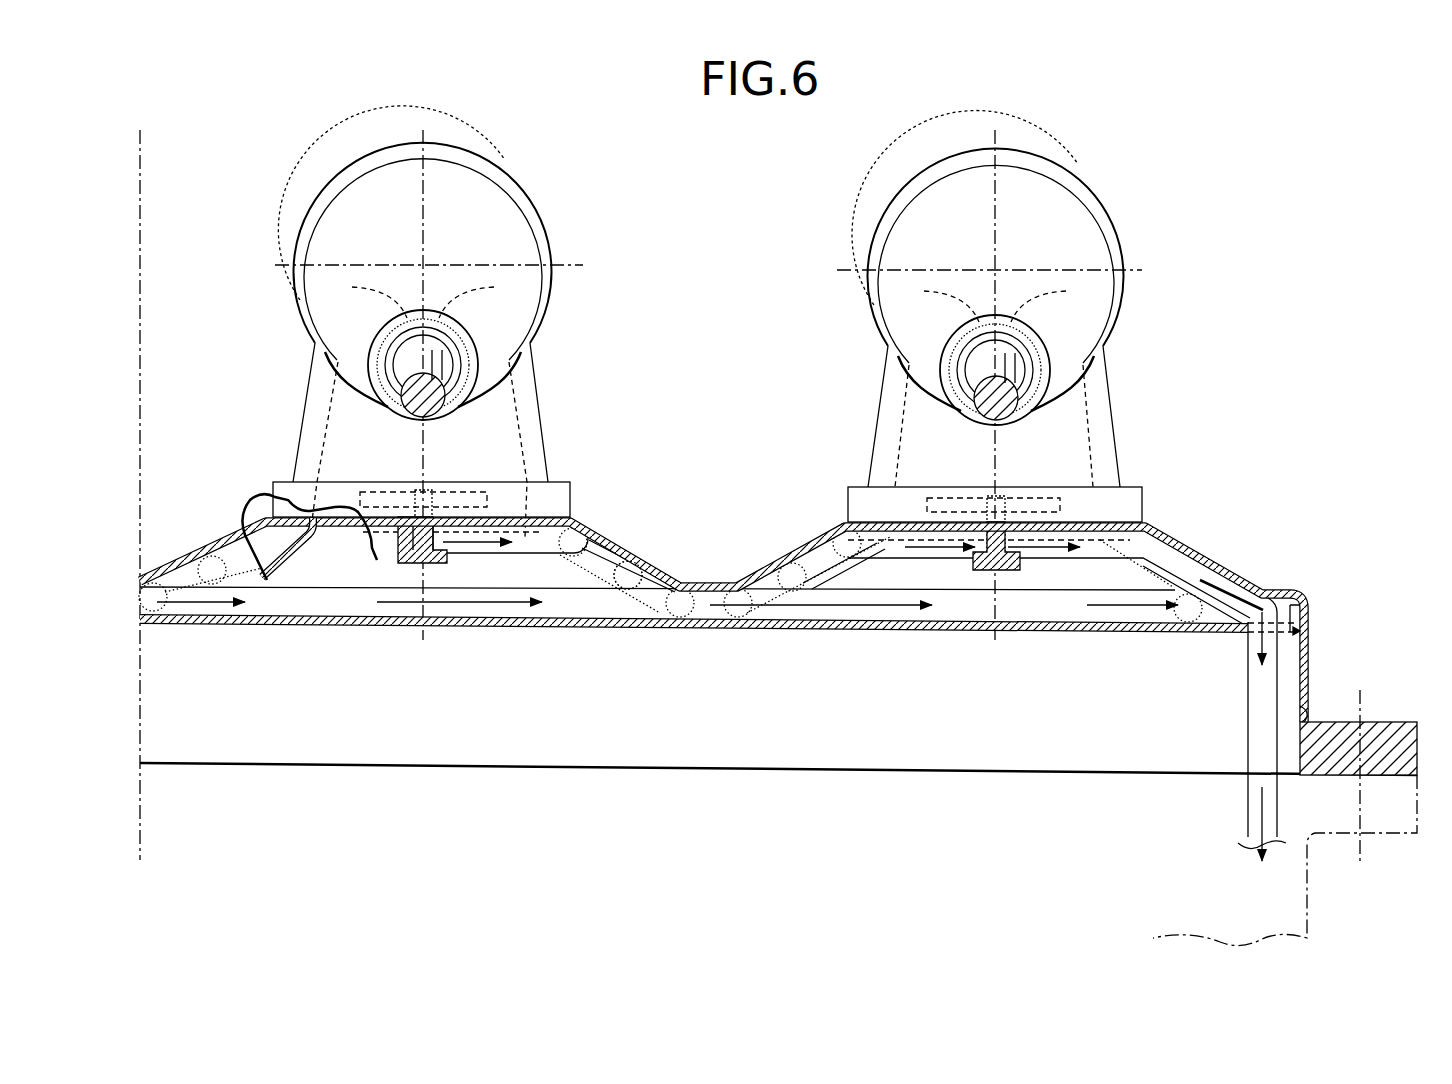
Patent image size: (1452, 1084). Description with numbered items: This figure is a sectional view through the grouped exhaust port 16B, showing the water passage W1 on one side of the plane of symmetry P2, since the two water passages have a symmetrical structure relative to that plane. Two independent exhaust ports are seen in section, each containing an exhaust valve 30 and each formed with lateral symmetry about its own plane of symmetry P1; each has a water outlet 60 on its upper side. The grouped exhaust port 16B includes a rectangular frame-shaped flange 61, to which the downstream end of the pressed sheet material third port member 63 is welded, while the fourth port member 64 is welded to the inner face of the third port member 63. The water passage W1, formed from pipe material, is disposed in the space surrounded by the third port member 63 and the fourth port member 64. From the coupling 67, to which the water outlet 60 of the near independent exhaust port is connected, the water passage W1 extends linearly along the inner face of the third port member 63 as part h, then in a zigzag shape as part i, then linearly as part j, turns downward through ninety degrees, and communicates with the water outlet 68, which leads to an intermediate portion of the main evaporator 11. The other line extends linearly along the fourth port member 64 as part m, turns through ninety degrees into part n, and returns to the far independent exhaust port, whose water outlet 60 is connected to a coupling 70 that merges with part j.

The plane of symmetry P2 is at (142, 187).
The plane of symmetry P1 is at (423, 242).
The exhaust valve 30 is at (492, 208).
The water outlet 60 is at (378, 484).
The coupling 70 is at (980, 562).
The part h is at (480, 527).
The part j is at (1080, 530).
The third port member 63 is at (783, 553).
The coupling 67 is at (397, 563).
The part i is at (648, 575).
The part m is at (570, 608).
The water passage W1 is at (867, 575).
The fourth port member 64 is at (957, 630).
The part n is at (1213, 632).
The grouped exhaust port 16B is at (1250, 553).
The water outlet 68 is at (1248, 815).
The flange 61 is at (1397, 722).
The main evaporator 11 is at (1307, 885).